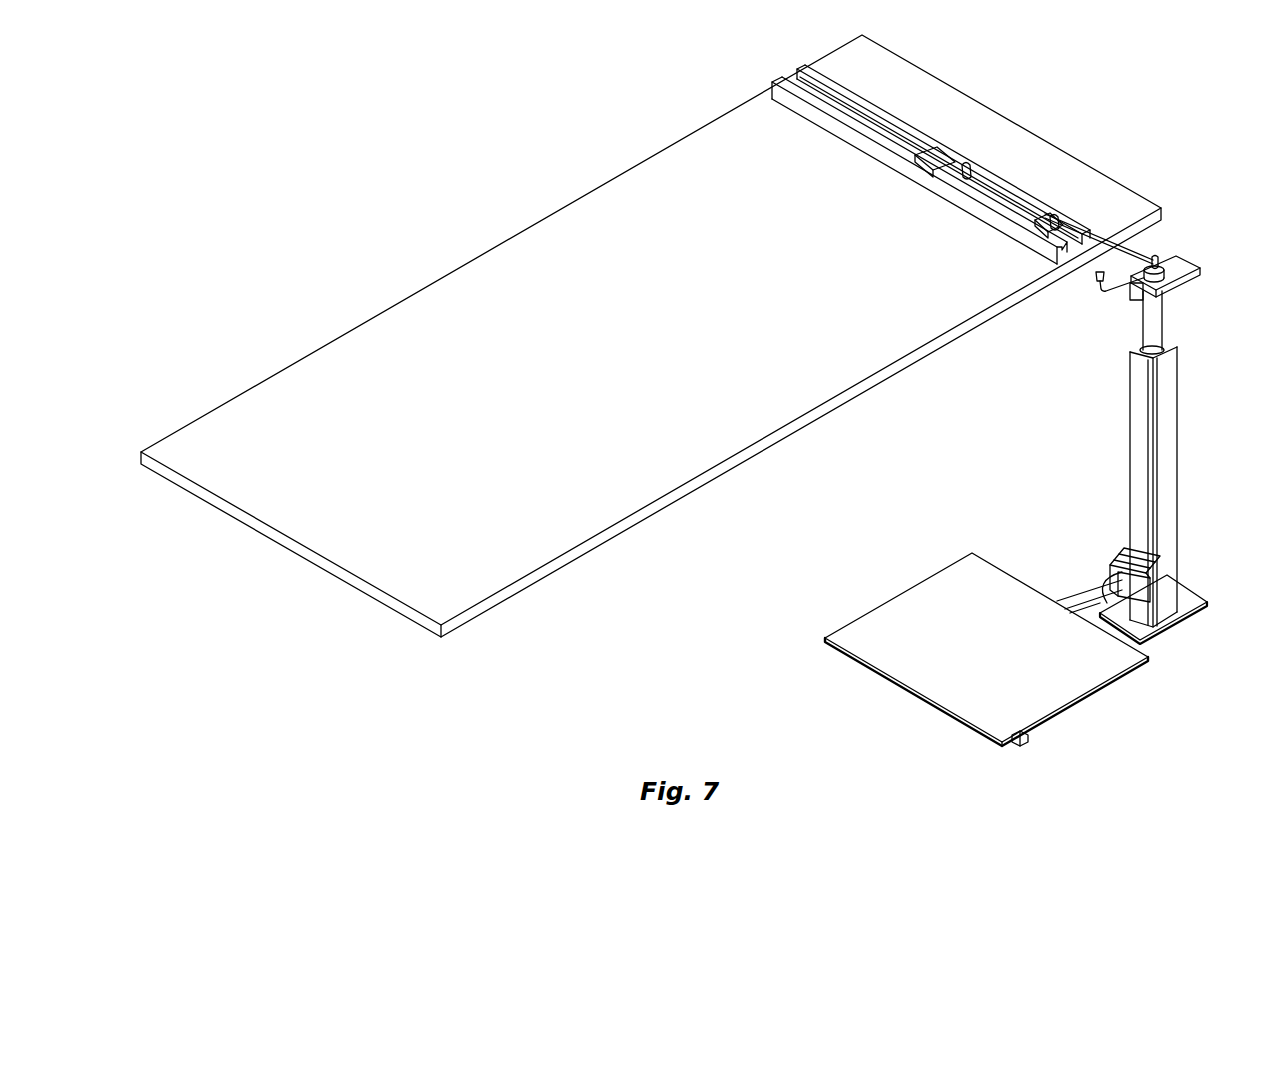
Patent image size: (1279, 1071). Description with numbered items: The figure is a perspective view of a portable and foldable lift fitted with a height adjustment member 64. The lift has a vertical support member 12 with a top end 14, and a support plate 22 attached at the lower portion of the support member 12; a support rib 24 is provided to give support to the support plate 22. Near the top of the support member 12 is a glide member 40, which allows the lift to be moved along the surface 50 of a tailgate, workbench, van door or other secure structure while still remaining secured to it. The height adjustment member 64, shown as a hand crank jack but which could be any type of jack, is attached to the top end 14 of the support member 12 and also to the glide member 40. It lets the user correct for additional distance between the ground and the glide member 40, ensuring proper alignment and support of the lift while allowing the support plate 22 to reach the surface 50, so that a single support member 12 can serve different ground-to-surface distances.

The support member 12 is at (1177, 445).
The top end 14 is at (1172, 347).
The support plate 22 is at (1105, 687).
The support rib 24 is at (1027, 743).
The glide member 40 is at (1140, 253).
The surface 50 is at (672, 359).
The height adjustment member 64 is at (1165, 320).